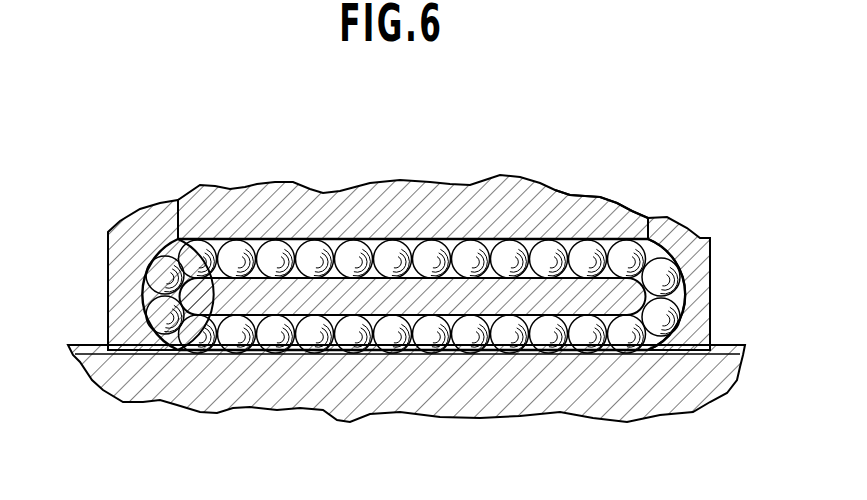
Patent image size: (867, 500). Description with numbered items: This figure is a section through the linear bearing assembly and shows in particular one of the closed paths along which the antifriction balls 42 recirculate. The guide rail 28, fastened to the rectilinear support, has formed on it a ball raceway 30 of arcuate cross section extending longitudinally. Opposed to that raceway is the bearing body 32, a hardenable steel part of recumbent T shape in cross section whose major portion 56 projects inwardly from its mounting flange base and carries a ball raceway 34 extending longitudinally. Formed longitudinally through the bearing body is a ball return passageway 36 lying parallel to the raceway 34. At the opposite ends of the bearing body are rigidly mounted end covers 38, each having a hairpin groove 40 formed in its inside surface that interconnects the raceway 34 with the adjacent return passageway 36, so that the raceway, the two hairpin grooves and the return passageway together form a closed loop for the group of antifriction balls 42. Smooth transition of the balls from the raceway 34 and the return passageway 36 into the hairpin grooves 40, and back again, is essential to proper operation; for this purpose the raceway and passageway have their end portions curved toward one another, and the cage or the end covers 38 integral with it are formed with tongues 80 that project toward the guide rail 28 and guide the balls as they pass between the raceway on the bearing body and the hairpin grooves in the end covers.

The guide rail 28 is at (710, 394).
The ball raceway 30 is at (338, 354).
The bearing body 32 is at (504, 176).
The ball raceway 34 is at (386, 314).
The ball return passageway 36 is at (344, 239).
The end cover 38 is at (118, 271).
The hairpin groove 40 is at (135, 300).
The antifriction balls 42 is at (582, 258).
The major portion 56 is at (615, 205).
The tongue 80 is at (141, 334).